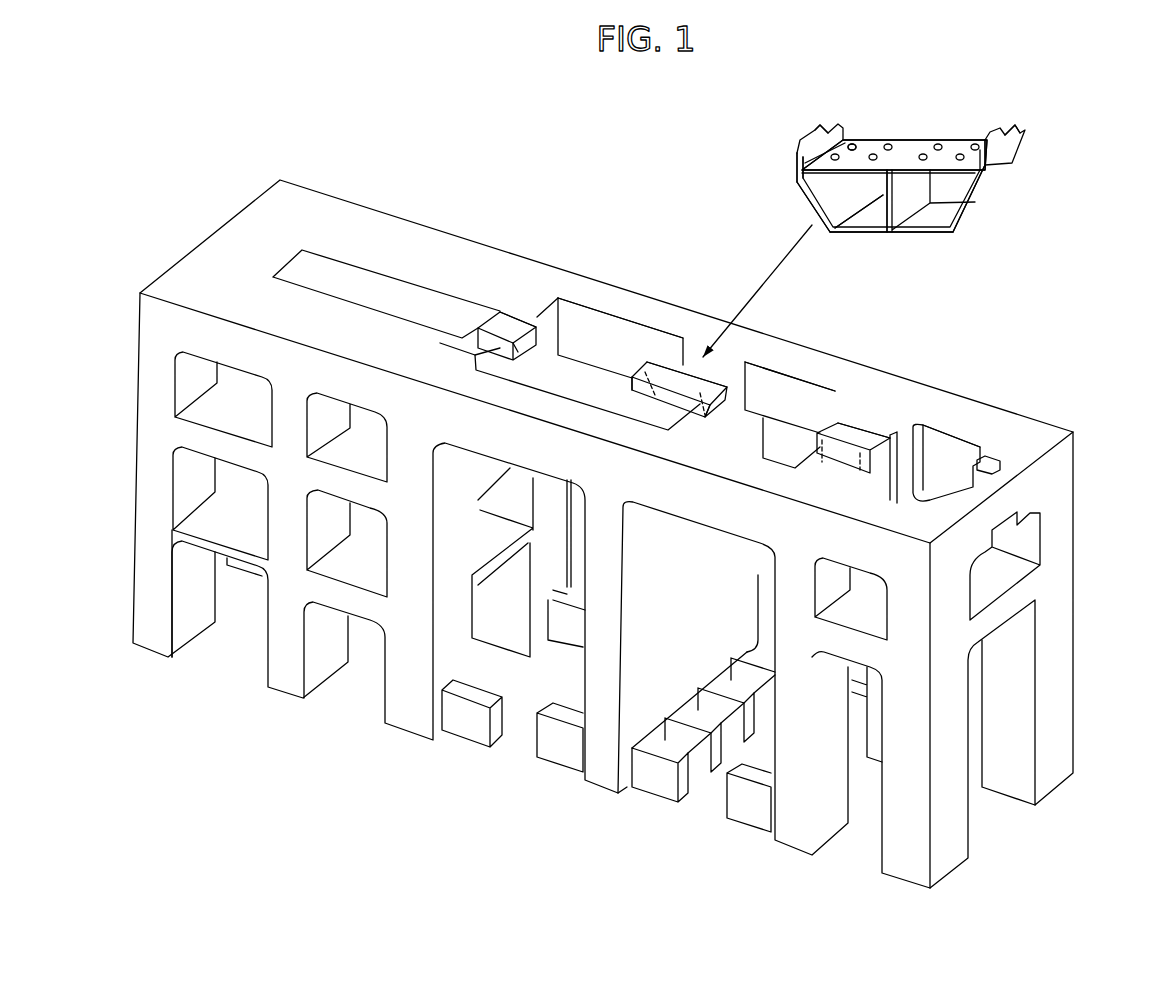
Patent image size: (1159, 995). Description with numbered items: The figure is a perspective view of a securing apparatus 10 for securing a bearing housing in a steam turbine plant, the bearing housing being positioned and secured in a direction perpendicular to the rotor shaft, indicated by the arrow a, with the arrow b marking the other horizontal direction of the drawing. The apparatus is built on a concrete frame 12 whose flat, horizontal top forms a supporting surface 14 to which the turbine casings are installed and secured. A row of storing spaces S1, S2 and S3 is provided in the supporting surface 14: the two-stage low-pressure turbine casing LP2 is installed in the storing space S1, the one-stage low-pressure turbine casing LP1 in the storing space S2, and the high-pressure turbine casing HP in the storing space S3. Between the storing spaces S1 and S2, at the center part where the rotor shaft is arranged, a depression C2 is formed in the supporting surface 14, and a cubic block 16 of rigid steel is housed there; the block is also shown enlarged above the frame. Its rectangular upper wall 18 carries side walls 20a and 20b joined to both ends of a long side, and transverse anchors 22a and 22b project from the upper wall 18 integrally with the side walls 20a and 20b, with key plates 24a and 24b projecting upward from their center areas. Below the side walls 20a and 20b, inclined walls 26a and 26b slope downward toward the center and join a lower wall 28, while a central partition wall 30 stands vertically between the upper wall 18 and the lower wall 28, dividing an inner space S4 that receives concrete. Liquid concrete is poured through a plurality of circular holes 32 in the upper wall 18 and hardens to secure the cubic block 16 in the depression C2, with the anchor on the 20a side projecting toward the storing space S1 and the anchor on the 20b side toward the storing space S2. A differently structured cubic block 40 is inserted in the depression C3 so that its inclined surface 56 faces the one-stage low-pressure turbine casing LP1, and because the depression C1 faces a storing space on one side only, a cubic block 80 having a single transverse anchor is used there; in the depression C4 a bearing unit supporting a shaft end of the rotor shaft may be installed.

The securing apparatus 10 is at (941, 362).
The concrete frame 12 is at (1076, 486).
The supporting surface 14 is at (1027, 437).
The cubic block 16 is at (667, 403).
The upper wall 18 is at (912, 138).
The side wall 20a is at (798, 166).
The side wall 20b is at (1010, 165).
The transverse anchor 22a is at (800, 142).
The transverse anchor 22b is at (1026, 131).
The key plate 24a is at (820, 126).
The key plate 24b is at (1006, 130).
The inclined wall 26a is at (648, 362).
The inclined wall 26b is at (703, 417).
The lower wall 28 is at (905, 235).
The partition wall 30 is at (915, 200).
The circular holes 32 is at (854, 143).
The cubic block 40 is at (887, 433).
The inclined surface 56 is at (518, 352).
The cubic block 80 is at (492, 318).
The depression C1 is at (515, 312).
The depression C2 is at (690, 380).
The depression C3 is at (880, 400).
The depression C4 is at (994, 462).
The one-stage low-pressure turbine casing LP1 is at (759, 375).
The two-stage low-pressure turbine casing LP2 is at (576, 328).
The high-pressure turbine casing HP is at (938, 446).
The storing space S1 is at (594, 355).
The storing space S2 is at (778, 413).
The storing space S3 is at (914, 481).
The inner space S4 is at (857, 197).
The arrow a is at (193, 225).
The arrow b is at (193, 225).